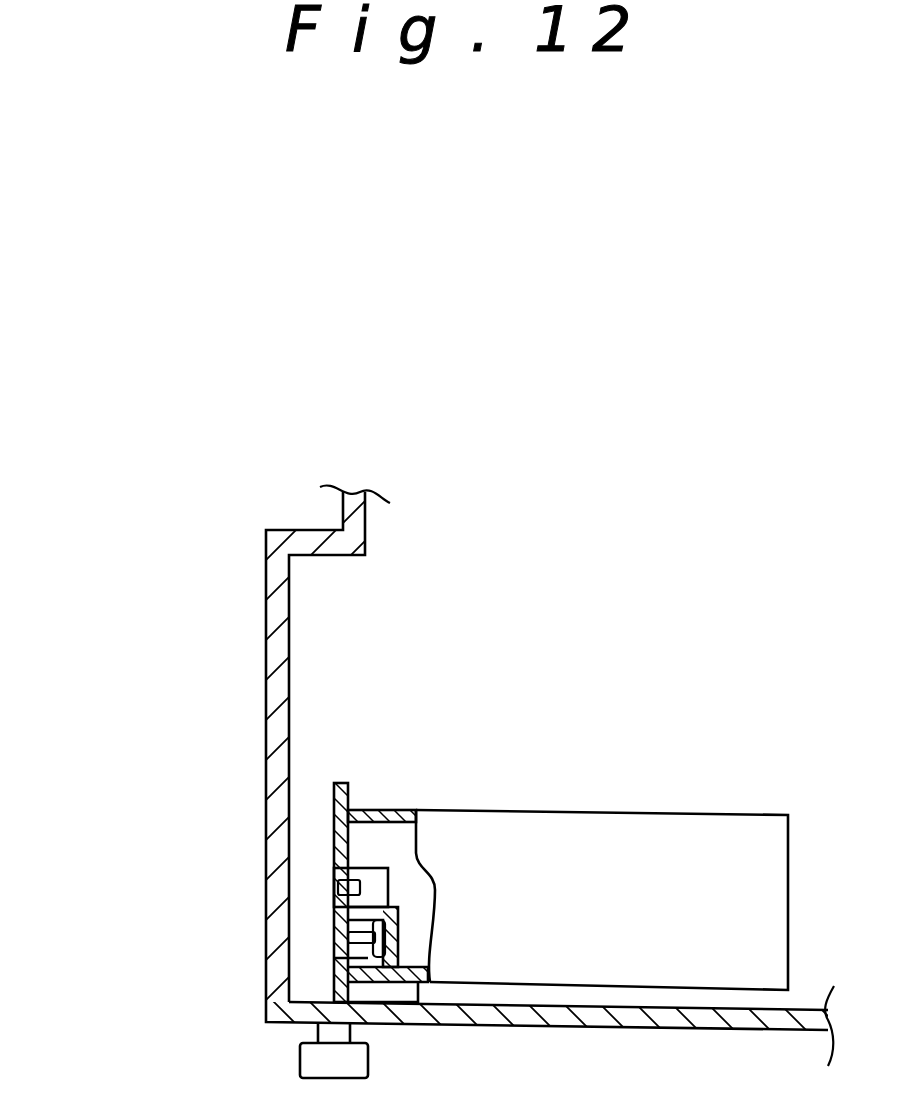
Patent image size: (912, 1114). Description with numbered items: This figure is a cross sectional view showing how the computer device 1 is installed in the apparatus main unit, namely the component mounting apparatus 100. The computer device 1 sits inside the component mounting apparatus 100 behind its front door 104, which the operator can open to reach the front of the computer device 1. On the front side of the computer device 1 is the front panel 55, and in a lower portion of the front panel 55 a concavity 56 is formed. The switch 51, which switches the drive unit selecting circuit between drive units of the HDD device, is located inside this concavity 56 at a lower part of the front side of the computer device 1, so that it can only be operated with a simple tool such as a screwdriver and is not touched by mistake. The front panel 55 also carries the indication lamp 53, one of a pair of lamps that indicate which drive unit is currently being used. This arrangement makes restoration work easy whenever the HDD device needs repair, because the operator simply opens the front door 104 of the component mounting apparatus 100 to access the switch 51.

The component mounting apparatus 100 is at (434, 781).
The front door 104 is at (267, 727).
The computer device 1 is at (650, 812).
The front panel 55 is at (337, 809).
The indication lamp 53 is at (350, 885).
The switch 51 is at (357, 938).
The concavity 56 is at (383, 943).